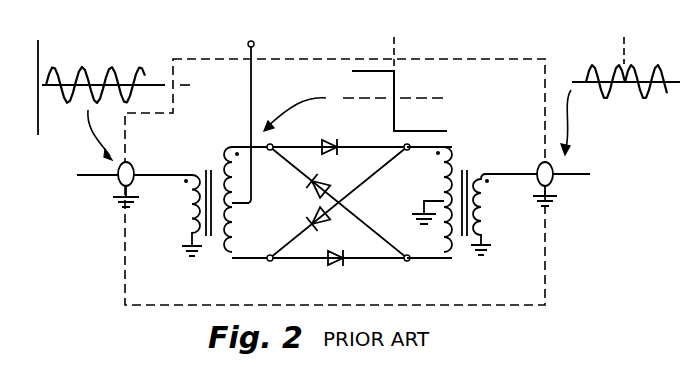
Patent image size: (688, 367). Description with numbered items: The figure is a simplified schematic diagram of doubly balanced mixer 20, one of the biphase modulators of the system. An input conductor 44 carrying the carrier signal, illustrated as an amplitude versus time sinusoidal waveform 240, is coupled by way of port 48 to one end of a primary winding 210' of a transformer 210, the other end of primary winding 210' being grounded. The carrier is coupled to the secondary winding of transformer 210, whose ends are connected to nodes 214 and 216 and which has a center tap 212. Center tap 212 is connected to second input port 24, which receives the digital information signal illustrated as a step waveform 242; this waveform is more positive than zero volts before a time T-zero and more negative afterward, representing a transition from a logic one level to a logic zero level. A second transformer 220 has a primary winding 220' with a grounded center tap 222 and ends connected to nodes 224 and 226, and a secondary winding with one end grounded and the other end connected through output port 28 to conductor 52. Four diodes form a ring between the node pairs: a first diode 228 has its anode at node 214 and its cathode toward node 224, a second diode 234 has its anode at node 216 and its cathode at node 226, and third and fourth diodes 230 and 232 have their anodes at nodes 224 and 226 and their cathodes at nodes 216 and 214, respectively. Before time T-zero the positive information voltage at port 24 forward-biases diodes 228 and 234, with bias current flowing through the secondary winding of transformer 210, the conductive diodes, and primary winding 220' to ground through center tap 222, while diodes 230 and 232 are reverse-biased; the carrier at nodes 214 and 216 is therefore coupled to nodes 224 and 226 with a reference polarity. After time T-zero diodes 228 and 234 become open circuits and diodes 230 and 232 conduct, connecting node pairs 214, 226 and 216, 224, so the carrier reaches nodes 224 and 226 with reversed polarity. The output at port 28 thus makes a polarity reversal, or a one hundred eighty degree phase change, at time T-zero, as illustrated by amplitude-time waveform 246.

The doubly balanced mixer 20 is at (335, 182).
The second input port 24 is at (254, 45).
The output port 28 is at (540, 165).
The input conductor 44 is at (88, 177).
The port 48 is at (131, 162).
The conductor 52 is at (583, 177).
The transformer 210 is at (209, 190).
The primary winding 210' is at (170, 215).
The center tap 212 is at (253, 196).
The node 214 is at (273, 145).
The node 216 is at (272, 262).
The transformer 220 is at (484, 219).
The primary winding 220' is at (429, 202).
The center tap 222 is at (422, 201).
The node 224 is at (409, 151).
The node 226 is at (409, 262).
The first diode 228 is at (340, 140).
The third diode 230 is at (322, 224).
The fourth diode 232 is at (319, 178).
The second diode 234 is at (345, 262).
The sinusoidal waveform 240 is at (111, 63).
The step waveform 242 is at (396, 89).
The amplitude-time waveform 246 is at (646, 101).